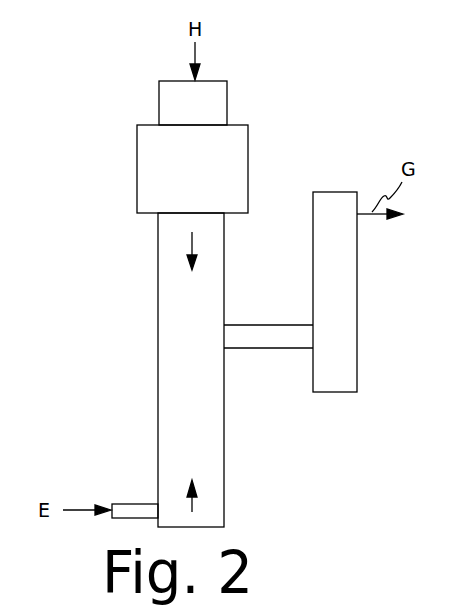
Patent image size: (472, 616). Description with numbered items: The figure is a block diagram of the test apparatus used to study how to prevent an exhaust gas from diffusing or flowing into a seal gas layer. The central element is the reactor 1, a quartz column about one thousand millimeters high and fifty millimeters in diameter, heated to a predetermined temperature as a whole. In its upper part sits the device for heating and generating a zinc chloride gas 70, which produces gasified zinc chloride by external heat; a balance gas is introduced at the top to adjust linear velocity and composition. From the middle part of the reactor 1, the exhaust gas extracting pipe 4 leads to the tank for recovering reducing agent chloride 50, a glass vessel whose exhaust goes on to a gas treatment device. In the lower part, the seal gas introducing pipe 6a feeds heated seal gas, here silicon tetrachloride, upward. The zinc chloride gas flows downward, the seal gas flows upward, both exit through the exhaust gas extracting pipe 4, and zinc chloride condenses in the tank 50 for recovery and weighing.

The reactor 1 is at (158, 278).
The device for heating and generating a zinc chloride gas 70 is at (248, 150).
The exhaust gas extracting pipe 4 is at (247, 325).
The tank for recovering reducing agent chloride 50 is at (357, 300).
The seal gas introducing pipe 6a is at (130, 504).